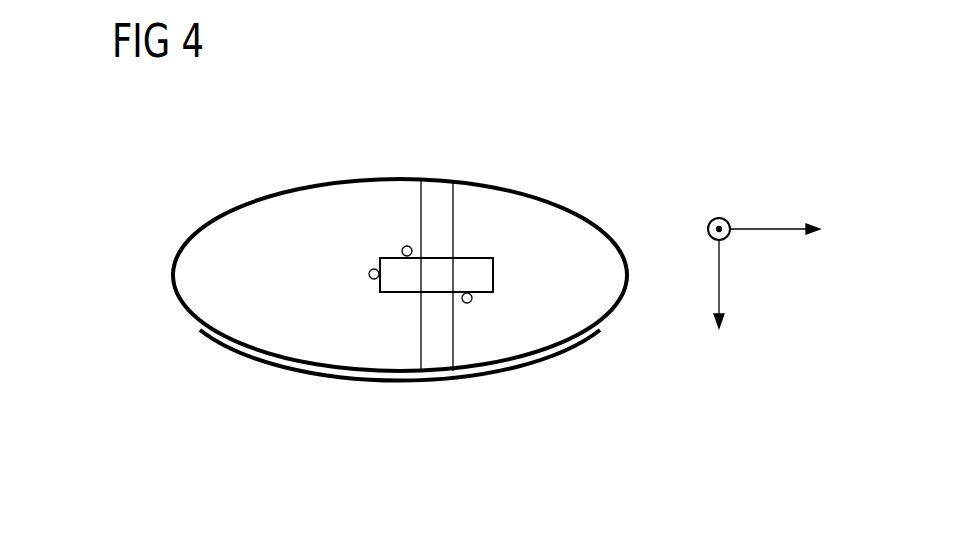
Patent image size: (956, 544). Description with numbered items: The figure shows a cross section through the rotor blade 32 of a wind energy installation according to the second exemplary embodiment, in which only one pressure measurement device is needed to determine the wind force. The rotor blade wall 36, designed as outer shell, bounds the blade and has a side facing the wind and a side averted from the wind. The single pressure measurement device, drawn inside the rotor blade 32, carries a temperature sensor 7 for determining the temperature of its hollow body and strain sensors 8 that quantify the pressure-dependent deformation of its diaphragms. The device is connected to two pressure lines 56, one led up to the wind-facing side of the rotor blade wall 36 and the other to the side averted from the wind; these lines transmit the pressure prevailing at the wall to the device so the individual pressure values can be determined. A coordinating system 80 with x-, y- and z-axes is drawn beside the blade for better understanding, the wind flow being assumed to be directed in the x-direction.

The temperature sensor 7 is at (368, 274).
The strain sensors 8 is at (402, 248).
The rotor blade 32 is at (177, 213).
The rotor blade wall 36 is at (288, 362).
The pressure lines 56 is at (437, 190).
The coordinating system 80 is at (748, 264).